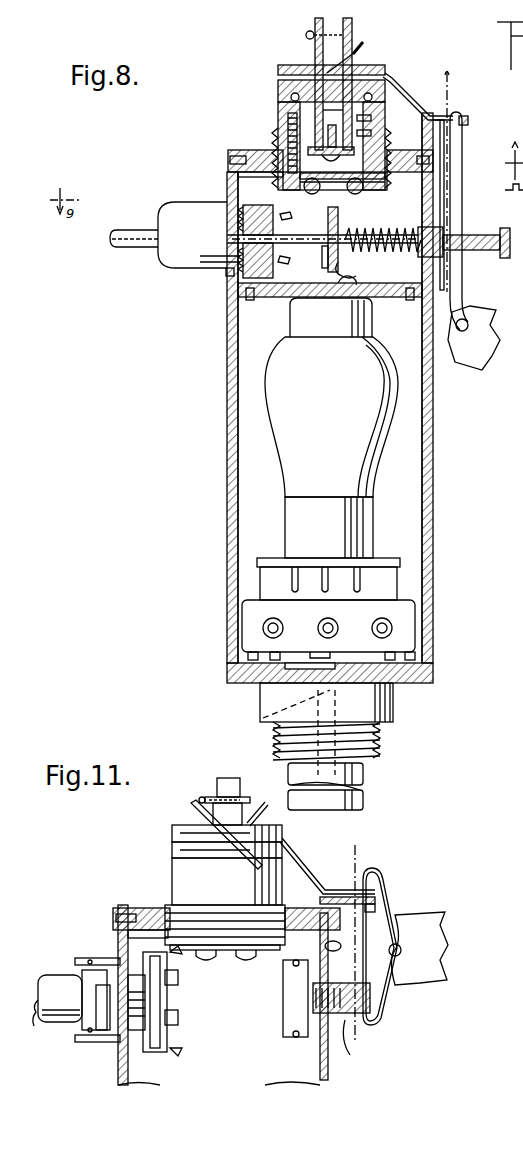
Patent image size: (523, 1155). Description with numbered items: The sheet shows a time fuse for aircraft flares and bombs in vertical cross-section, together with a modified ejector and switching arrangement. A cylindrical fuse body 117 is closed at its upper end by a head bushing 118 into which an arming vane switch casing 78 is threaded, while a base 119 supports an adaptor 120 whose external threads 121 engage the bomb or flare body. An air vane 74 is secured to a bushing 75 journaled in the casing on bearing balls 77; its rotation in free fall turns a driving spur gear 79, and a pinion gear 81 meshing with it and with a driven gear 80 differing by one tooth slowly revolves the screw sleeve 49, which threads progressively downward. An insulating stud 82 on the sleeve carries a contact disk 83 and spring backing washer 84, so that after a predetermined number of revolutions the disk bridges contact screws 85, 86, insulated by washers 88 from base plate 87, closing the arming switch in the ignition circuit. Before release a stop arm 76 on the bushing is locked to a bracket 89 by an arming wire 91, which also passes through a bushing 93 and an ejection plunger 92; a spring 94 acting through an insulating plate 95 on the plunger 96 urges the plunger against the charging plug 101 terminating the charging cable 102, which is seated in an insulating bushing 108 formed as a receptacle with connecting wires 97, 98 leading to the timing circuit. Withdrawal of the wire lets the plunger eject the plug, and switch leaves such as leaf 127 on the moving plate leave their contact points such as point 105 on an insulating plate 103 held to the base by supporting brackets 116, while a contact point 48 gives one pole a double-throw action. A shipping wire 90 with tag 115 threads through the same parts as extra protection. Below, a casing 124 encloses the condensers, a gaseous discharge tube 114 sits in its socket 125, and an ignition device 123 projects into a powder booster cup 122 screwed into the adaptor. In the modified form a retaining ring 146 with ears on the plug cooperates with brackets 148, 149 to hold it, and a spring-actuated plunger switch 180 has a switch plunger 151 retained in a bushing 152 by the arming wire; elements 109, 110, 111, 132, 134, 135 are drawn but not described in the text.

In FIG. 8, the contact point 48 is at (322, 298).
In FIG. 8, the screw sleeve 49 is at (315, 58).
In FIG. 8, the air vane 74 is at (364, 44).
In FIG. 11, the air vane 74 is at (196, 800).
In FIG. 8, the bushing 75 is at (392, 80).
In FIG. 8, the stop arm 76 is at (420, 105).
In FIG. 11, the stop arm 76 is at (310, 880).
In FIG. 8, the bearing balls 77 is at (279, 88).
In FIG. 8, the arming vane switch casing 78 is at (279, 124).
In FIG. 11, the arming vane switch casing 78 is at (172, 862).
In FIG. 8, the driving spur gear 79 is at (372, 118).
In FIG. 8, the driven gear 80 is at (372, 133).
In FIG. 8, the pinion gear 81 is at (279, 112).
In FIG. 8, the insulating stud 82 is at (358, 12).
In FIG. 11, the insulating stud 82 is at (225, 778).
In FIG. 8, the contact disk 83 is at (342, 158).
In FIG. 8, the spring backing washer 84 is at (312, 150).
In FIG. 8, the contact screw 85 is at (240, 176).
In FIG. 11, the contact screw 85 is at (204, 957).
In FIG. 8, the contact screw 86 is at (386, 180).
In FIG. 11, the contact screw 86 is at (246, 957).
In FIG. 8, the base plate 87 is at (370, 190).
In FIG. 8, the washers 88 is at (303, 192).
In FIG. 8, the bracket 89 is at (470, 121).
In FIG. 11, the bracket 89 is at (325, 946).
In FIG. 8, the shipping wire 90 is at (463, 152).
In FIG. 11, the shipping wire 90 is at (386, 890).
In FIG. 8, the arming wire 91 is at (450, 80).
In FIG. 11, the arming wire 91 is at (360, 860).
In FIG. 8, the ejection plunger 92 is at (228, 243).
In FIG. 8, the bushing 93 is at (462, 252).
In FIG. 8, the spring 94 is at (384, 230).
In FIG. 8, the insulating plate 95 is at (339, 214).
In FIG. 8, the plunger 96 is at (325, 256).
In FIG. 8, the connecting wire 97 is at (291, 215).
In FIG. 8, the connecting wire 98 is at (289, 258).
In FIG. 8, the charging plug 101 is at (180, 210).
In FIG. 11, the charging plug 101 is at (55, 972).
In FIG. 8, the charging cable 102 is at (122, 249).
In FIG. 11, the charging cable 102 is at (42, 1020).
In FIG. 8, the insulating plate 103 is at (274, 297).
In FIG. 8, the switch contact point 105 is at (356, 281).
In FIG. 8, the insulating bushing 108 is at (228, 272).
In FIG. 8, the disc 109 is at (243, 214).
In FIG. 8, the disc 110 is at (243, 226).
In FIG. 8, the shaft 111 is at (198, 266).
In FIG. 8, the gaseous discharge tube 114 is at (282, 383).
In FIG. 8, the tag 115 is at (478, 330).
In FIG. 11, the tag 115 is at (430, 944).
In FIG. 8, the supporting brackets 116 is at (239, 487).
In FIG. 8, the fuse body 117 is at (228, 338).
In FIG. 11, the fuse body 117 is at (329, 1083).
In FIG. 8, the head bushing 118 is at (240, 150).
In FIG. 11, the head bushing 118 is at (140, 908).
In FIG. 8, the base 119 is at (434, 676).
In FIG. 8, the adaptor 120 is at (394, 712).
In FIG. 8, the external threads 121 is at (384, 752).
In FIG. 8, the powder booster cup 122 is at (366, 796).
In FIG. 8, the ignition device 123 is at (262, 718).
In FIG. 8, the casing 124 is at (250, 630).
In FIG. 8, the socket 125 is at (384, 558).
In FIG. 8, the spring switch leaf 127 is at (350, 272).
In FIG. 11, the disc 132 is at (160, 1050).
In FIG. 11, the nut 134 is at (178, 985).
In FIG. 11, the nut 135 is at (178, 1020).
In FIG. 11, the retaining ring 146 is at (90, 1010).
In FIG. 11, the bracket 148 is at (110, 1042).
In FIG. 11, the bracket 149 is at (96, 945).
In FIG. 11, the switch plunger 151 is at (372, 1000).
In FIG. 11, the bushing 152 is at (350, 1046).
In FIG. 11, the spring-actuated plunger switch 180 is at (283, 1005).